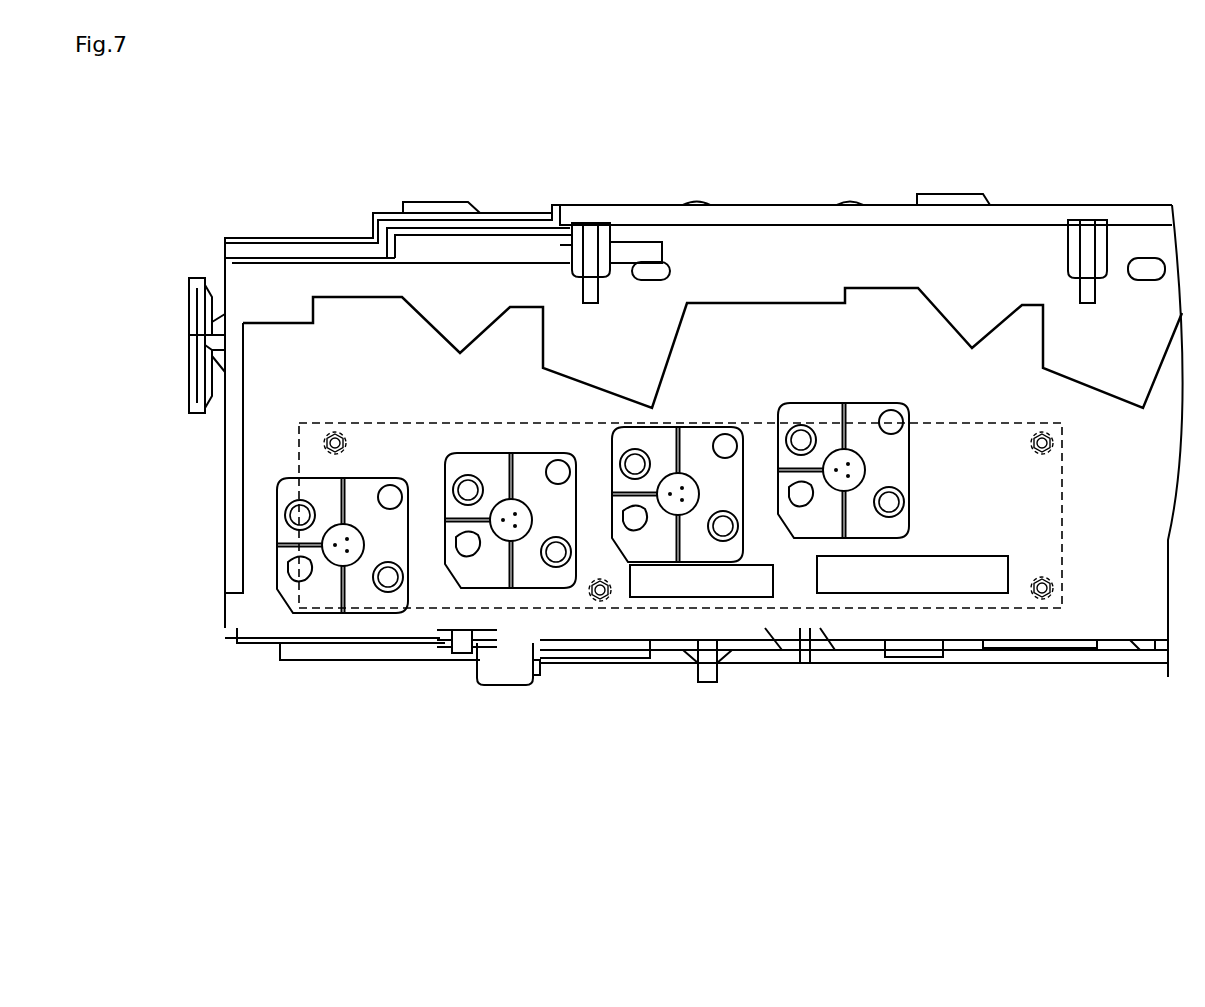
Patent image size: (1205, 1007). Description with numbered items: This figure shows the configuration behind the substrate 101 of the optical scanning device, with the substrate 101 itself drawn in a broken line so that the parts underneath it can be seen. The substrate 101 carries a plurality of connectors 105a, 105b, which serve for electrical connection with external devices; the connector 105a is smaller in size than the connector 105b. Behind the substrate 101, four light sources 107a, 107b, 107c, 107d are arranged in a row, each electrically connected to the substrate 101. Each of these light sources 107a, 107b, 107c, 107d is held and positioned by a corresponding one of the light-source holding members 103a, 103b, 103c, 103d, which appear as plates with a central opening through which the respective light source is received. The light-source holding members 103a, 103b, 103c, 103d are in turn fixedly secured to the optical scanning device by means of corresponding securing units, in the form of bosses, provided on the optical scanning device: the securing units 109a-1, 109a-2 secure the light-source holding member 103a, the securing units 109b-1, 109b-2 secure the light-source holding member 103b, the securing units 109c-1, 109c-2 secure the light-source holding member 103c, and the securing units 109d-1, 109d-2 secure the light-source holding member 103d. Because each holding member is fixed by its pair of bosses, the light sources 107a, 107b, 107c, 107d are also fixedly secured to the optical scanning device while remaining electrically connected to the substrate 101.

The substrate 101 is at (1063, 563).
The light-source holding member 103a is at (288, 593).
The light-source holding member 103b is at (465, 573).
The light-source holding member 103c is at (625, 543).
The light-source holding member 103d is at (800, 520).
The connector 105a is at (743, 585).
The connector 105b is at (957, 583).
The light source 107a is at (355, 550).
The light source 107b is at (521, 527).
The light source 107c is at (697, 507).
The light source 107d is at (860, 480).
The securing unit (boss) 109a-1 is at (296, 503).
The securing unit (boss) 109a-2 is at (389, 562).
The securing unit (boss) 109b-1 is at (468, 475).
The securing unit (boss) 109b-2 is at (556, 537).
The securing unit (boss) 109c-1 is at (638, 450).
The securing unit (boss) 109c-2 is at (722, 510).
The securing unit (boss) 109d-1 is at (806, 427).
The securing unit (boss) 109d-2 is at (891, 486).